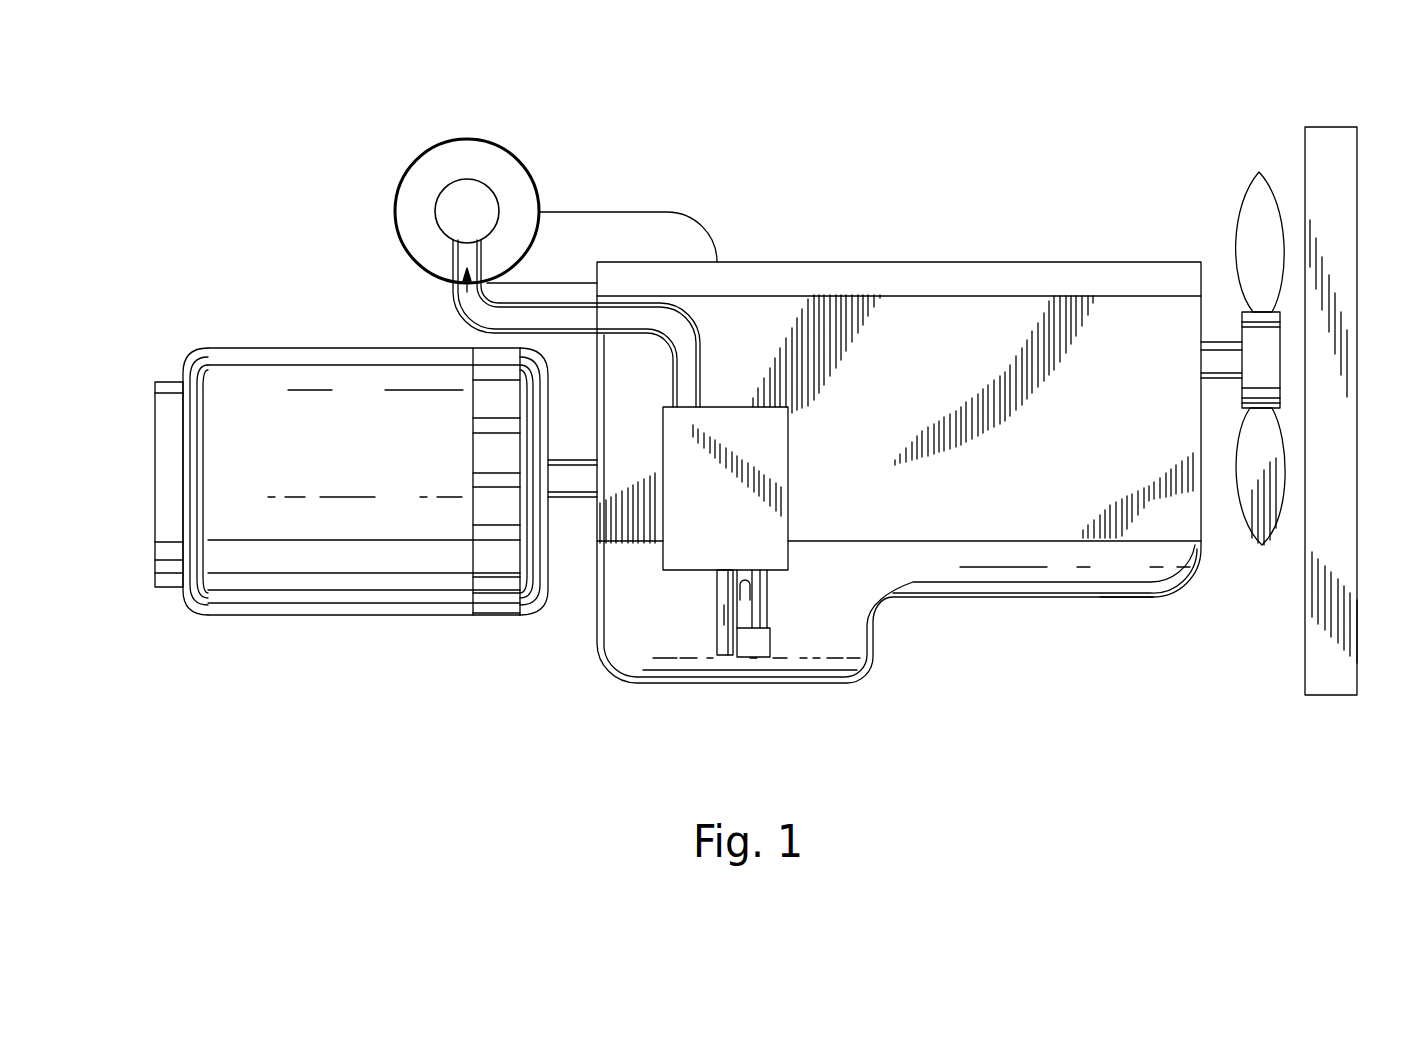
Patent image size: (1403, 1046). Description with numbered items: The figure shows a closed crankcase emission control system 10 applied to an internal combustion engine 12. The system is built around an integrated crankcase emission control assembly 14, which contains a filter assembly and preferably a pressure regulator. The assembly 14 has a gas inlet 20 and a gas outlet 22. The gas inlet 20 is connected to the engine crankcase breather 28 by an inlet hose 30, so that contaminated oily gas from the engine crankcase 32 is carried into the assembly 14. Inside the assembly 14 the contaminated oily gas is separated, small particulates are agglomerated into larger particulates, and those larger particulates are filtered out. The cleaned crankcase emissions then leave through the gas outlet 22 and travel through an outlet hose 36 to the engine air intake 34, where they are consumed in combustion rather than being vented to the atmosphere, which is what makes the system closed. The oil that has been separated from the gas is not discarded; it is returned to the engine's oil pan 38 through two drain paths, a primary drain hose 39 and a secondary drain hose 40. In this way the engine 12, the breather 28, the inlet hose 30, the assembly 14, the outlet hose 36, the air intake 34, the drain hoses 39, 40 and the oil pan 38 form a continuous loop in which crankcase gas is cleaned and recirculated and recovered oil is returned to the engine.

The closed crankcase emission control system 10 is at (957, 127).
The internal combustion engine 12 is at (1188, 600).
The integrated crankcase emission control assembly 14 is at (772, 560).
The gas inlet 20 is at (720, 575).
The gas outlet 22 is at (703, 398).
The engine crankcase breather 28 is at (747, 647).
The inlet hose 30 is at (713, 620).
The engine crankcase 32 is at (1132, 308).
The engine air intake 34 is at (410, 168).
The outlet hose 36 is at (465, 323).
The oil pan 38 is at (873, 615).
The primary drain hose 39 is at (753, 570).
The secondary drain hose 40 is at (765, 608).